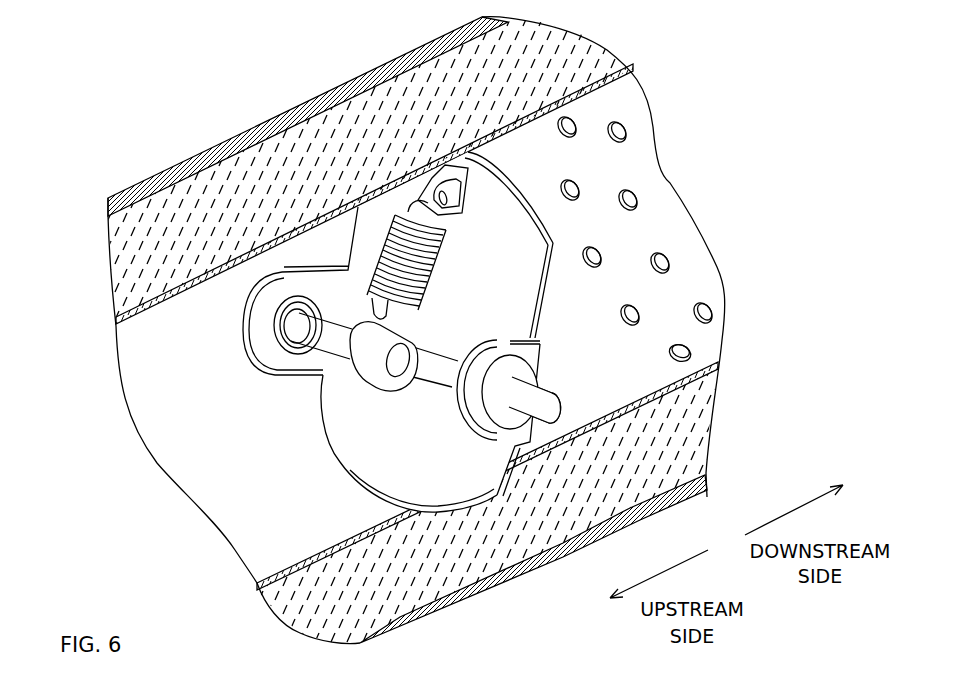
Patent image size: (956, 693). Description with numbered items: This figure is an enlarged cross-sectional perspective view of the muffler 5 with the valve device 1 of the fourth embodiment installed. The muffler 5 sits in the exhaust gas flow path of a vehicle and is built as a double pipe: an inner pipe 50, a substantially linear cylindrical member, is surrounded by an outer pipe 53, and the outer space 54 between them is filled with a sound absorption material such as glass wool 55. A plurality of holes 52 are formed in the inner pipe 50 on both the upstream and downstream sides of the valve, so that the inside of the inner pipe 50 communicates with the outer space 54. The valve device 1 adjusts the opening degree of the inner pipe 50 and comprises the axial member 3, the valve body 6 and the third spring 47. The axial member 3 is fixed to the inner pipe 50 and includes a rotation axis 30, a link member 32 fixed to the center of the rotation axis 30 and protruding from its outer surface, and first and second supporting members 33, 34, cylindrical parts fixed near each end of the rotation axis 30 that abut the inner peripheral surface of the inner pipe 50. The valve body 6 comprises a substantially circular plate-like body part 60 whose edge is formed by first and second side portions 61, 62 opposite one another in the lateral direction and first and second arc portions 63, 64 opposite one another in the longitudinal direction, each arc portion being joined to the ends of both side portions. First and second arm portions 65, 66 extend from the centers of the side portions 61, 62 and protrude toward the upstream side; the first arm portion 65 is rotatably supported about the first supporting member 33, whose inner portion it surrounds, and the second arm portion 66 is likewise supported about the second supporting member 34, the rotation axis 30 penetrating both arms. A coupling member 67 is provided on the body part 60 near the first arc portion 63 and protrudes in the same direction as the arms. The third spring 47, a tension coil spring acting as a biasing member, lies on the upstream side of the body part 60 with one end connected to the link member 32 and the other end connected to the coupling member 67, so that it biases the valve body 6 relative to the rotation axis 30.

The valve device 1 is at (302, 476).
The axial member 3 is at (579, 372).
The muffler 5 is at (725, 131).
The valve body 6 is at (568, 243).
The rotation axis 30 is at (433, 378).
The link member 32 is at (365, 364).
The first supporting member 33 is at (516, 356).
The second supporting member 34 is at (305, 345).
The third spring 47 is at (433, 243).
The inner pipe 50 is at (158, 463).
The holes 52 is at (715, 295).
The outer pipe 53 is at (338, 98).
The outer space 54 is at (293, 162).
The glass wool 55 is at (197, 213).
The body part 60 is at (399, 342).
The first side portion 61 is at (547, 287).
The second side portion 62 is at (345, 215).
The first arc portion 63 is at (483, 153).
The second arc portion 64 is at (355, 475).
The first arm portion 65 is at (497, 440).
The second arm portion 66 is at (247, 357).
The coupling member 67 is at (452, 190).